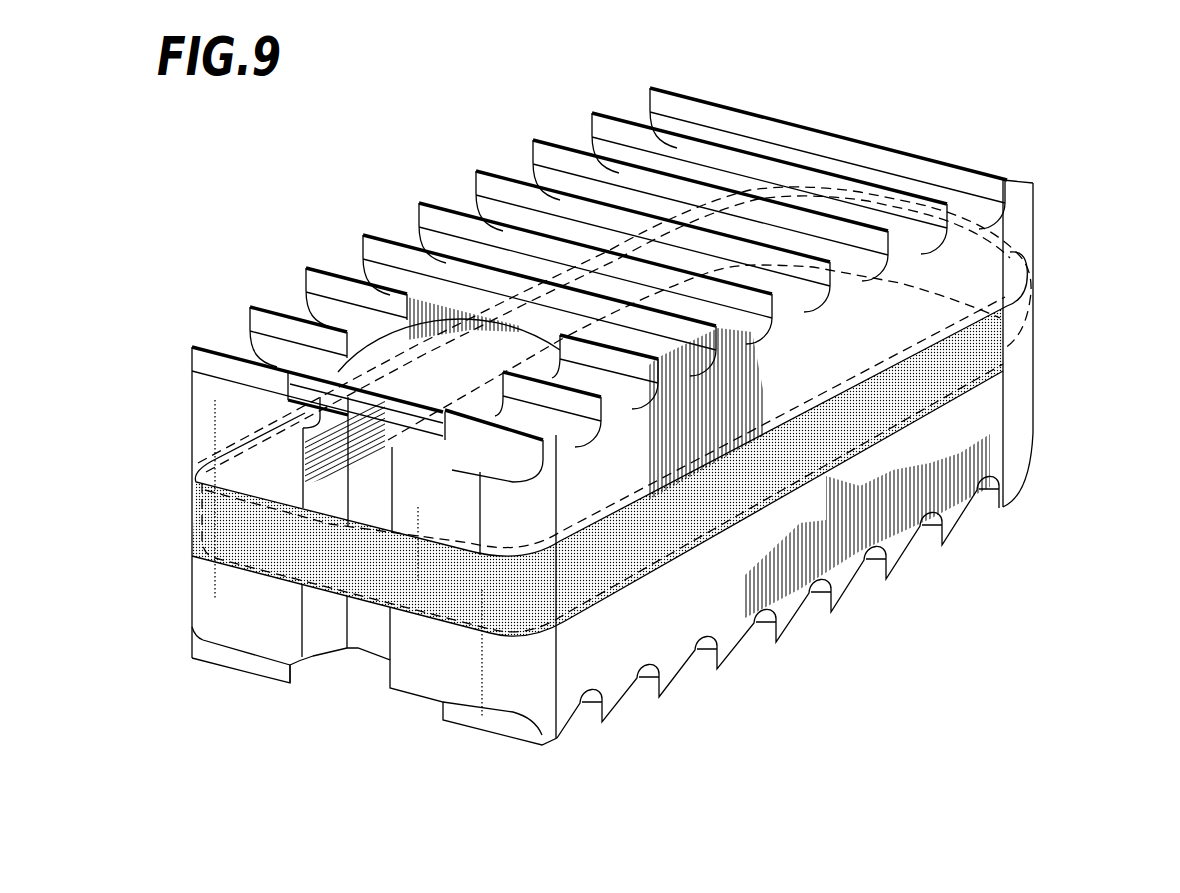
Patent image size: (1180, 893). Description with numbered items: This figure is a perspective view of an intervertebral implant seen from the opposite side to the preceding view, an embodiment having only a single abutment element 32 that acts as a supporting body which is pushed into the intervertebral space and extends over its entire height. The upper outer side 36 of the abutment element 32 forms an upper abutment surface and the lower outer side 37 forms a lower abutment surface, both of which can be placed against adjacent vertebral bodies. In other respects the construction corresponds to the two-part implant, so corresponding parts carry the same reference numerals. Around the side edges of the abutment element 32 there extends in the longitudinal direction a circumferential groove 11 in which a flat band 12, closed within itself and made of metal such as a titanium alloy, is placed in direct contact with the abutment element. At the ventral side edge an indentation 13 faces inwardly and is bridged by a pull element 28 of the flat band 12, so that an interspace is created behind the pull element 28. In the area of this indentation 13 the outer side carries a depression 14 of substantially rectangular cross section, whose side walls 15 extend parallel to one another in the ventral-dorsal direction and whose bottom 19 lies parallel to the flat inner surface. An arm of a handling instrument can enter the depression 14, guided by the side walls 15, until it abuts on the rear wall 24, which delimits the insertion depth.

The circumferential groove 11 is at (1023, 297).
The flat band 12 is at (1050, 336).
The indentation 13 is at (351, 687).
The depression 14 is at (487, 320).
The side walls 15 is at (367, 352).
The bottom 19 is at (343, 375).
The rear wall 24 is at (477, 350).
The pull element 28 is at (330, 557).
The abutment element 32 is at (727, 615).
The upper outer side 36 is at (620, 153).
The lower outer side 37 is at (622, 700).